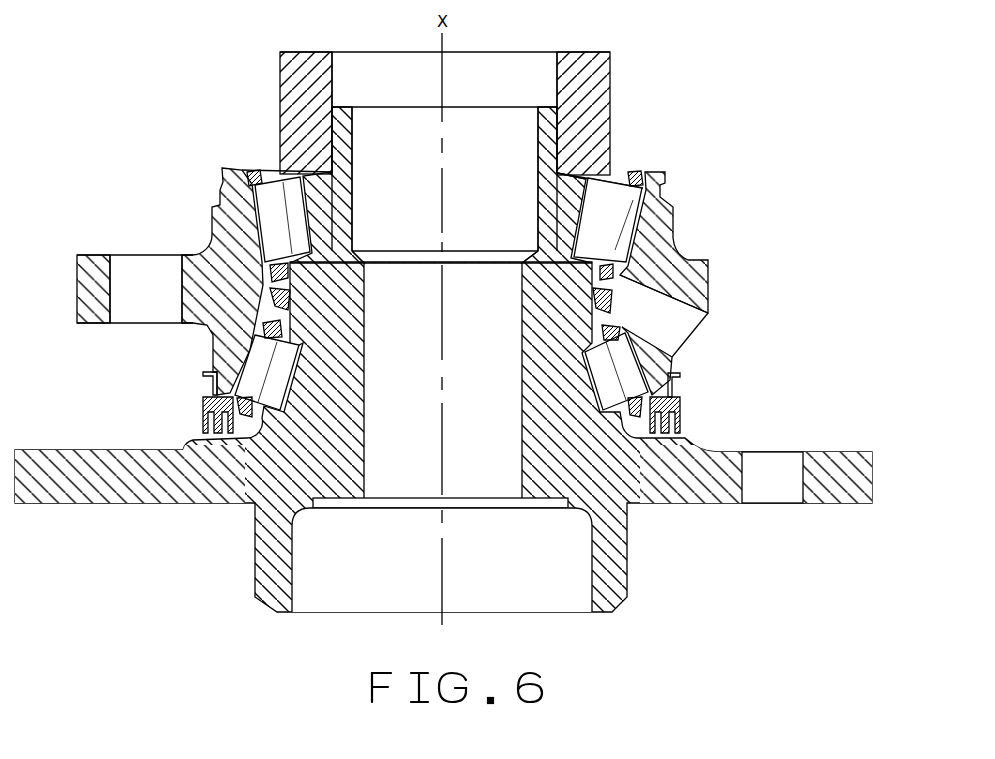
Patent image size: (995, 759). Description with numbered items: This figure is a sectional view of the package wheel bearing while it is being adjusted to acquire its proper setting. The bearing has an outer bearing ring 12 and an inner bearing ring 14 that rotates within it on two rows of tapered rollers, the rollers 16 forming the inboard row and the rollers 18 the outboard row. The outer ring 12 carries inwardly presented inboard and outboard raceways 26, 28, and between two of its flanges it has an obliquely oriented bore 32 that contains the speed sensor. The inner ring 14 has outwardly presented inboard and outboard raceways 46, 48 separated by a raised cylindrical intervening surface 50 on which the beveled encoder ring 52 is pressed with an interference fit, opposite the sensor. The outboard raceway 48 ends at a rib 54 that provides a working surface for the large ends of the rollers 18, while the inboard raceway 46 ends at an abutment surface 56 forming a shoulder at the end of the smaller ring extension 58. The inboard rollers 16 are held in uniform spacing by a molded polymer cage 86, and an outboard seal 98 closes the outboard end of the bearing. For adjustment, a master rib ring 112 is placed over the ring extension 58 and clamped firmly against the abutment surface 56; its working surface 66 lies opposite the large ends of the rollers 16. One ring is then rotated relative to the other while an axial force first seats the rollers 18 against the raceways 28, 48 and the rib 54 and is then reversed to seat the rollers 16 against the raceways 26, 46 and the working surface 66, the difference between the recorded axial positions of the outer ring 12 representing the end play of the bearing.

The outer bearing ring 12 is at (222, 232).
The inner bearing ring 14 is at (627, 520).
The tapered rollers (inboard row) 16 is at (280, 212).
The tapered rollers (outboard row) 18 is at (277, 362).
The inboard raceway of outer ring 26 is at (253, 172).
The outboard raceway of outer ring 28 is at (258, 357).
The bore 32 is at (648, 297).
The inboard raceway of inner ring 46 is at (607, 211).
The outboard raceway of inner ring 48 is at (602, 385).
The intervening surface 50 is at (600, 335).
The encoder ring 52 is at (597, 303).
The rib 54 is at (630, 405).
The abutment surface 56 is at (597, 110).
The ring extension 58 is at (350, 128).
The working surface 66 is at (552, 186).
The cage 86 is at (637, 170).
The outboard seal 98 is at (205, 408).
The master rib ring 112 is at (592, 84).